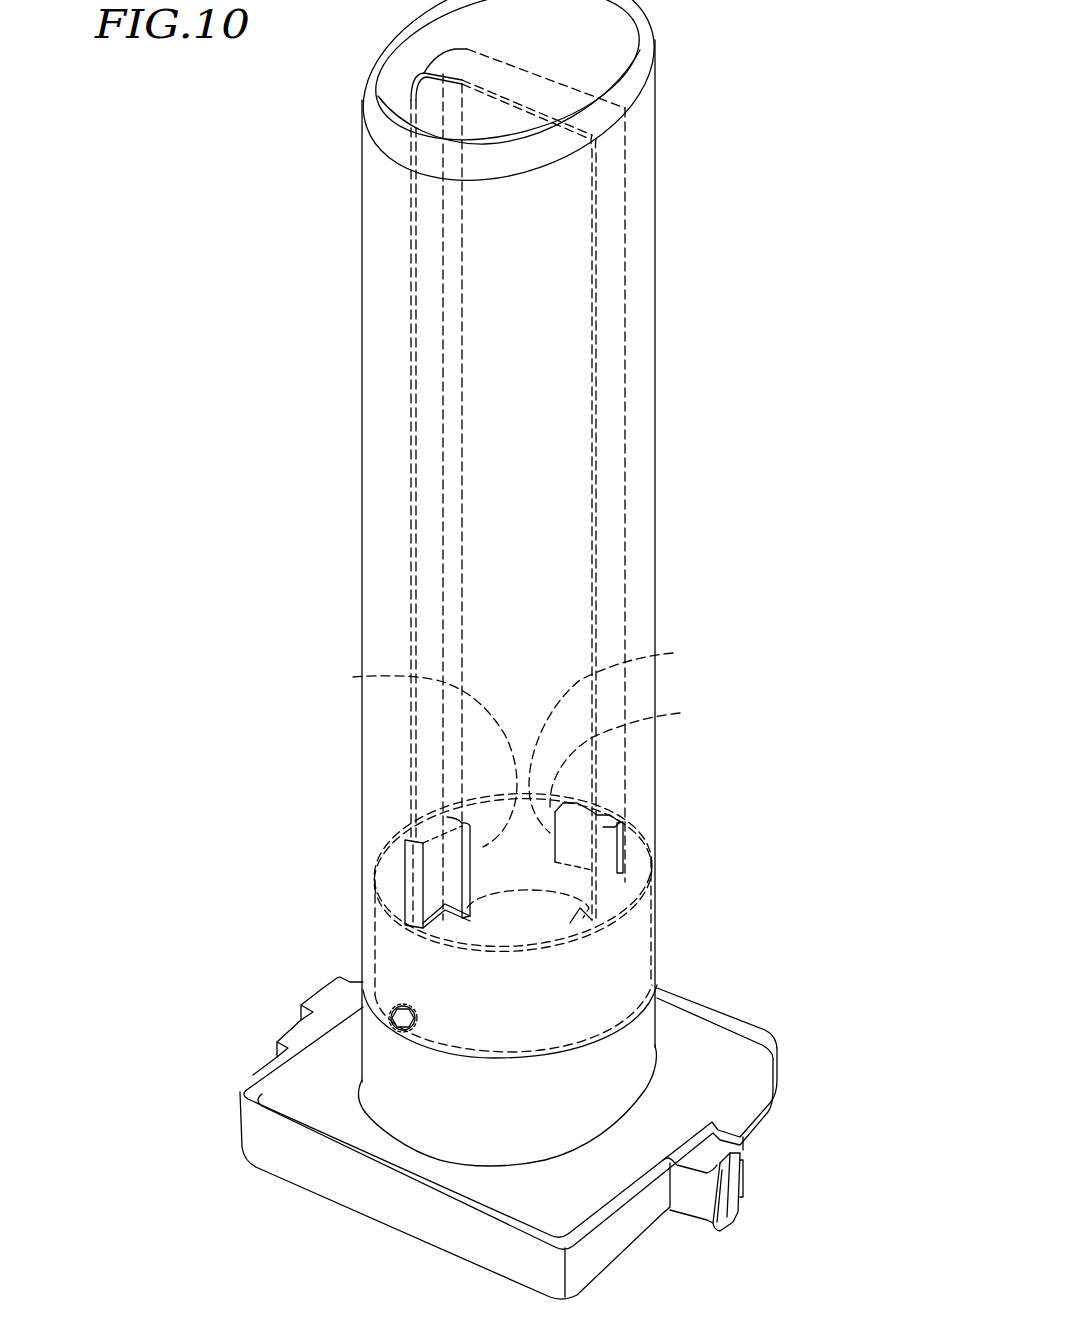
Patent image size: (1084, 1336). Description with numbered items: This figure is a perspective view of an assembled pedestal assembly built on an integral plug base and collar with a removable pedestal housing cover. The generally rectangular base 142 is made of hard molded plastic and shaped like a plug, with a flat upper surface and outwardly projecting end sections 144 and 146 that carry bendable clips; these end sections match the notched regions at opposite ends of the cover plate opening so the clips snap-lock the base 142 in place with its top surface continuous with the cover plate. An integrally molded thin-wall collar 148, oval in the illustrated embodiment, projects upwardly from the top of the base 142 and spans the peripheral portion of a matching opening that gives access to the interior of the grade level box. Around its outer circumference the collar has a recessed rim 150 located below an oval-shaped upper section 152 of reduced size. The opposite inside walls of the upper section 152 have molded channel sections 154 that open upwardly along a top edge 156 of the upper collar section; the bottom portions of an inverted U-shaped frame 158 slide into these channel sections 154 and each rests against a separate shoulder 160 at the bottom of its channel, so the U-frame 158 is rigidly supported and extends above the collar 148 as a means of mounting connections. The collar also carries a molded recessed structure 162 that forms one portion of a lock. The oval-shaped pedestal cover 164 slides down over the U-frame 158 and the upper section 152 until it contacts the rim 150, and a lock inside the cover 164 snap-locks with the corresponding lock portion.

The base 142 is at (708, 1056).
The projecting end section 144 is at (747, 1179).
The projecting end section 146 is at (323, 997).
The collar 148 is at (402, 1092).
The recessed rim 150 is at (615, 1013).
The upper section 152 is at (657, 910).
The channel sections 154 is at (353, 677).
The top edge 156 is at (680, 713).
The inverted U-shaped frame 158 is at (628, 549).
The shoulder 160 is at (440, 930).
The recessed structure 162 is at (673, 654).
The pedestal cover 164 is at (655, 604).